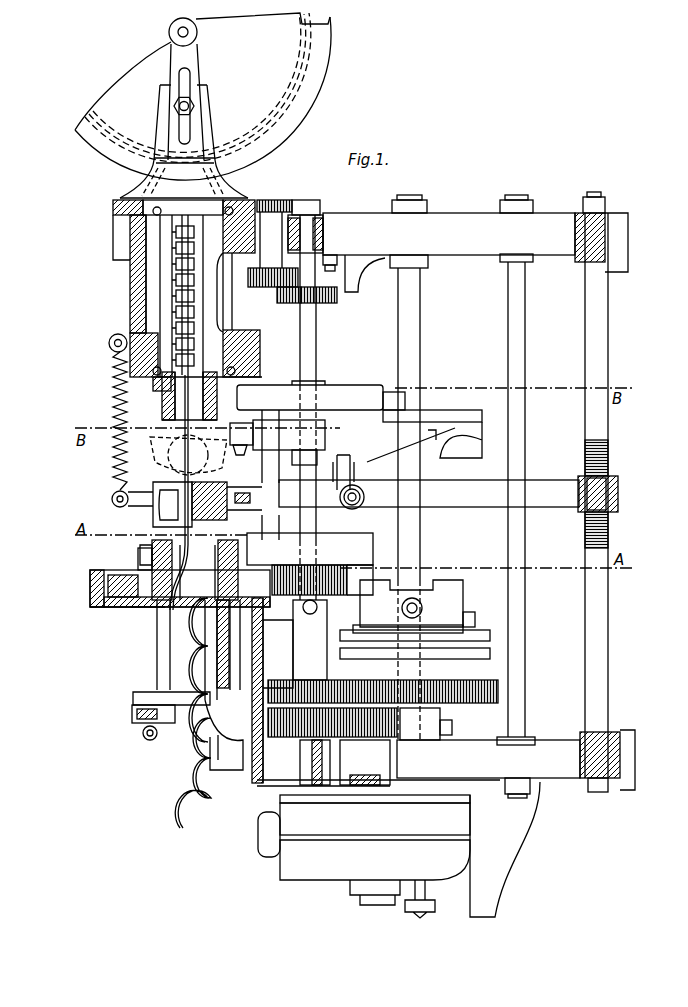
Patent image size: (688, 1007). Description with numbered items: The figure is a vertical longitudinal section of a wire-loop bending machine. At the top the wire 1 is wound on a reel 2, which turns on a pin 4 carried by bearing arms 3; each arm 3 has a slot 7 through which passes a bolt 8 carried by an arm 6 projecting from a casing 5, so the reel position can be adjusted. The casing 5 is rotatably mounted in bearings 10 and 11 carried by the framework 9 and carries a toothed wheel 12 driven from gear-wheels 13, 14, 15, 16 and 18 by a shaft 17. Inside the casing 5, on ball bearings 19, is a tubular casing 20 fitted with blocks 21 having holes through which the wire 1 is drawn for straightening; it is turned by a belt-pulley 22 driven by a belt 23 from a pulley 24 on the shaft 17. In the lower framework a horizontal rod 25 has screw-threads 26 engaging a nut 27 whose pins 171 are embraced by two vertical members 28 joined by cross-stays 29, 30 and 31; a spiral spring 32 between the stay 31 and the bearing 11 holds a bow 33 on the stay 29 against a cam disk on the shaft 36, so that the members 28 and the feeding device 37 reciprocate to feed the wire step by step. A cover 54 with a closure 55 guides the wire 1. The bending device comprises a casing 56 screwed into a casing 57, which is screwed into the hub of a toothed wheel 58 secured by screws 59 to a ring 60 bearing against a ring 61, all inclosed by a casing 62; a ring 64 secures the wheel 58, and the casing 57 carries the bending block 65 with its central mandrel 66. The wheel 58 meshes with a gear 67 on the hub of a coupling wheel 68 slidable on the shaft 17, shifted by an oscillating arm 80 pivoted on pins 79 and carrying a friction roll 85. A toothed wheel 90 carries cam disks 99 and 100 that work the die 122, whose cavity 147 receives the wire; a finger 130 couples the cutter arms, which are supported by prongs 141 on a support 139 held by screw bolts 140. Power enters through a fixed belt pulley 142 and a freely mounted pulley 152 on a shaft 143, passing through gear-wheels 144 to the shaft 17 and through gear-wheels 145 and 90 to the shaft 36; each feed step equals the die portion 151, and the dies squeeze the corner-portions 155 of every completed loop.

The wire 1 is at (104, 132).
The reel 2 is at (130, 90).
The bearing arms 3 is at (178, 60).
The pin 4 is at (169, 32).
The casing 5 is at (160, 272).
The arms 6 is at (210, 166).
The slot 7 is at (192, 90).
The bolt 8 is at (196, 106).
The framework 9 is at (455, 228).
The bearing 10 is at (130, 240).
The bearing 11 is at (118, 335).
The toothed wheel 12 is at (113, 205).
The gear-wheel 13 is at (282, 196).
The gear-wheel 14 is at (248, 278).
The gear-wheel 15 is at (338, 270).
The gear-wheel 16 is at (284, 304).
The shaft 17 is at (310, 362).
The gear-wheel 18 is at (314, 304).
The ball bearings 19 is at (150, 198).
The tubular casing 20 is at (176, 294).
The blocks 21 is at (176, 312).
The belt-pulley 22 is at (162, 419).
The belt 23 is at (162, 406).
The pulley 24 is at (268, 400).
The horizontal rod 25 is at (585, 334).
The screw-threads 26 is at (585, 462).
The nut 27 is at (580, 512).
The vertical members 28 is at (444, 506).
The cross-stay 29 is at (354, 506).
The cross-stay 30 is at (243, 492).
The cross-stay 31 is at (113, 497).
The spiral spring 32 is at (113, 414).
The bow 33 is at (358, 490).
The rotatable shaft 36 is at (412, 722).
The feeding device 37 is at (170, 492).
The cover 54 is at (343, 472).
The closure 55 is at (456, 446).
The casing 56 is at (418, 360).
The casing 57 is at (160, 545).
The toothed wheel 58 is at (140, 572).
The screws 59 is at (112, 578).
The ring 60 is at (120, 607).
The ring 61 is at (160, 607).
The casing 62 is at (98, 607).
The ring 64 is at (142, 556).
The bending block 65 is at (140, 607).
The mandrel 66 is at (240, 660).
The gear 67 is at (292, 567).
The coupling wheel 68 is at (362, 548).
The pins 79 is at (424, 606).
The oscillating arm 80 is at (386, 602).
The friction roll 85 is at (300, 608).
The toothed wheel 90 is at (468, 702).
The cam disk 99 is at (466, 654).
The cam disk 100 is at (474, 636).
The die 122 is at (212, 660).
The finger 130 is at (143, 733).
The support 139 is at (226, 754).
The screw bolts 140 is at (180, 750).
The angle-shaped prongs 141 is at (133, 700).
The fixed belt pulley 142 is at (330, 830).
The shaft 143 is at (280, 799).
The gear-wheels 144 is at (345, 742).
The gear-wheel 145 is at (402, 690).
The cavity 147 is at (180, 648).
The die portion 151 is at (132, 714).
The freely mounted belt pulley 152 is at (356, 870).
The corner-portions 155 is at (146, 670).
The pins 171 is at (586, 530).